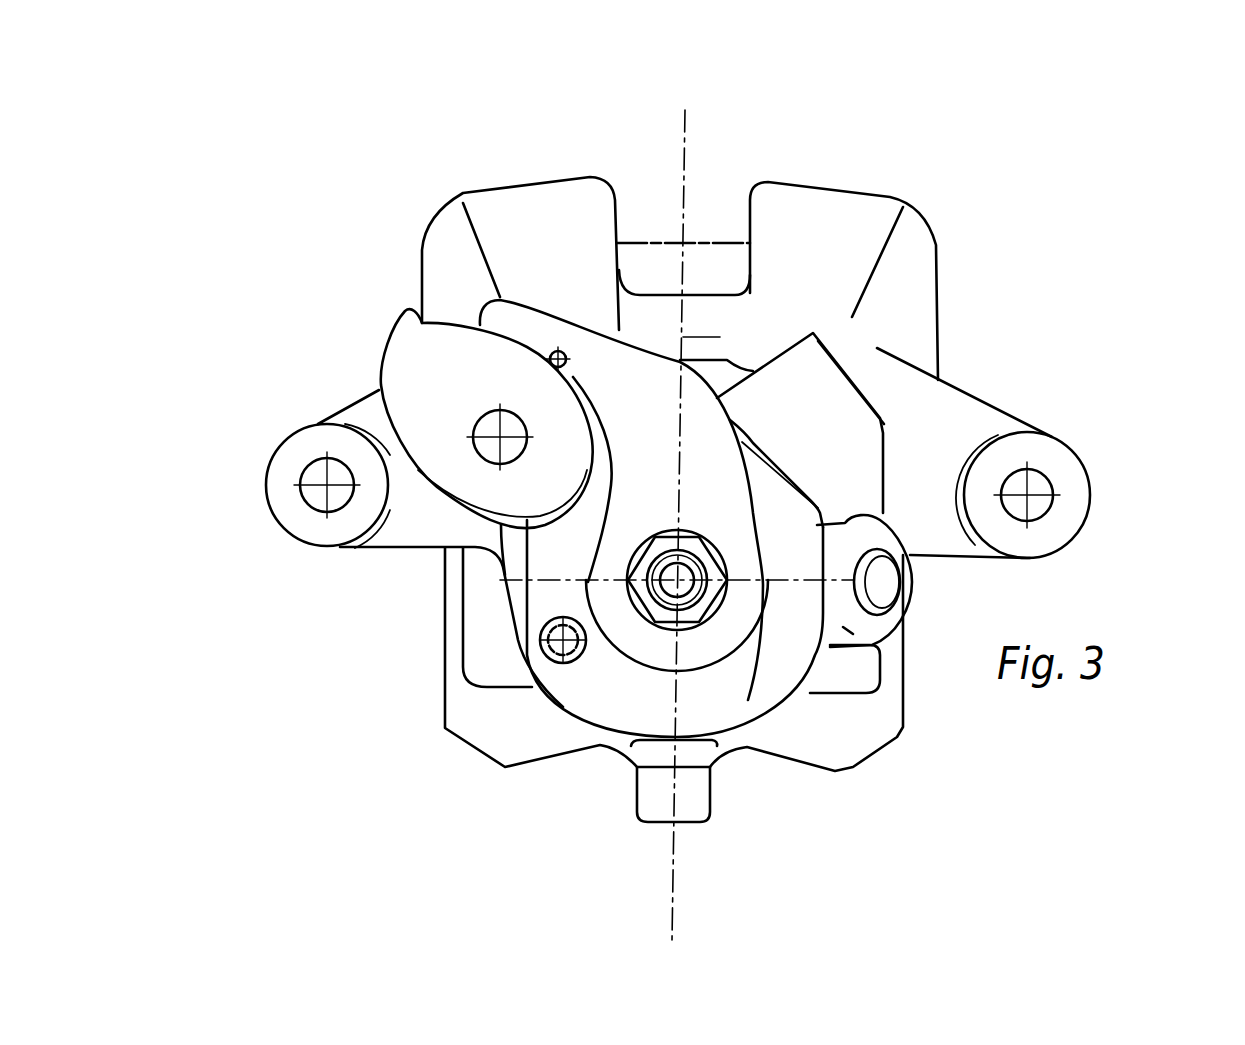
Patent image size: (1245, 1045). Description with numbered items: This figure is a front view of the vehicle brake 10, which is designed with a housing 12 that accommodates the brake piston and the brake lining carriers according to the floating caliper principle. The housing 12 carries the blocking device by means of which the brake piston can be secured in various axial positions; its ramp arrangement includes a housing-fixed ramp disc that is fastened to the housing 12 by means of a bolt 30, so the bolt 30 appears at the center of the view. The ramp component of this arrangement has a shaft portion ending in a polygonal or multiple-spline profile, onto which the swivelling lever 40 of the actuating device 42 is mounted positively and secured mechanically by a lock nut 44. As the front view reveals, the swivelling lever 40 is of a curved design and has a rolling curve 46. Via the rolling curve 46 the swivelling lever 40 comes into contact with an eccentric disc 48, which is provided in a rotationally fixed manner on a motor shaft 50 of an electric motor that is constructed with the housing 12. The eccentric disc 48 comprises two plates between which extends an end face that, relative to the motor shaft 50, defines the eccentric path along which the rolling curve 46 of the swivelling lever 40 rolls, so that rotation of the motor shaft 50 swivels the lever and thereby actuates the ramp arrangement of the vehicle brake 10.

The vehicle brake 10 is at (1174, 130).
The housing 12 is at (930, 283).
The bolt 30 is at (683, 587).
The swivelling lever 40 is at (614, 345).
The actuating device 42 is at (682, 343).
The lock nut 44 is at (660, 620).
The rolling curve 46 is at (578, 518).
The eccentric disc 48 is at (430, 385).
The motor shaft 50 is at (487, 445).